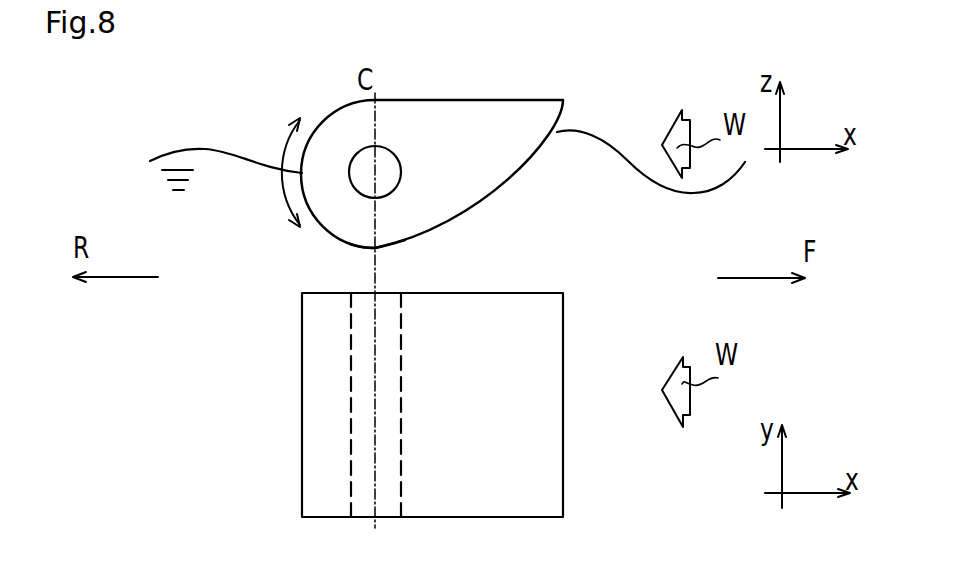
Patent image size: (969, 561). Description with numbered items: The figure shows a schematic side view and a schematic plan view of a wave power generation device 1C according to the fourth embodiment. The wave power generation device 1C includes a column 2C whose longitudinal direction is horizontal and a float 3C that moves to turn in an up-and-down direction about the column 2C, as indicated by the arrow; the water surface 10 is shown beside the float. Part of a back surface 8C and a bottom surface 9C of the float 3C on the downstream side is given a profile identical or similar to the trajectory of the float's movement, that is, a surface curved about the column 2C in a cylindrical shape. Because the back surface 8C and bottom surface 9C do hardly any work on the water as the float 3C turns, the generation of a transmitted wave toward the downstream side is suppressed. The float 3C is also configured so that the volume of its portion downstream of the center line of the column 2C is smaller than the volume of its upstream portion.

The wave power generation device 1C is at (130, 125).
The water surface 10 is at (200, 148).
The column 2C is at (388, 163).
The float 3C is at (489, 189).
The back surface 8C is at (318, 222).
The bottom surface 9C is at (385, 248).